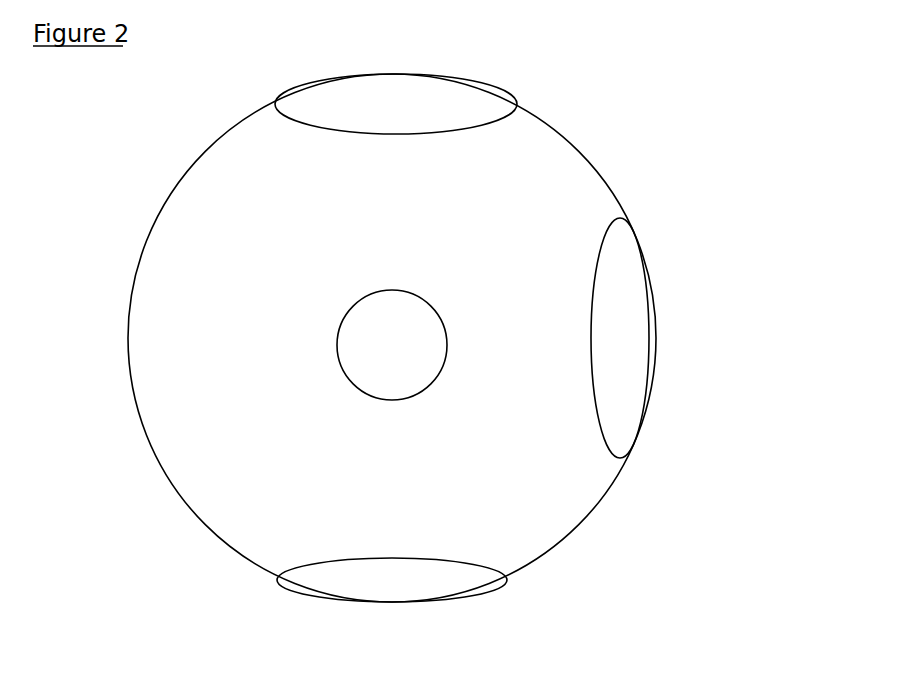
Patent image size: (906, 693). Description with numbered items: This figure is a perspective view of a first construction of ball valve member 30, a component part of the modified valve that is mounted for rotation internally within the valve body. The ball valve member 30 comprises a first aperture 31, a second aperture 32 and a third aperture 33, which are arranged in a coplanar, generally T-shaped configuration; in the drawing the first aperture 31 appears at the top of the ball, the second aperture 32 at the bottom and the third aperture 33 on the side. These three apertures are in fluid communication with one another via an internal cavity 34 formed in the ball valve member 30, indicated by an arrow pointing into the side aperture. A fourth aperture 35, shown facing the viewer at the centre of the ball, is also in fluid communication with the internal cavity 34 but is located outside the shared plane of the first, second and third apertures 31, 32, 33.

The ball valve member 30 is at (567, 180).
The first aperture 31 is at (478, 93).
The second aperture 32 is at (412, 587).
The third aperture 33 is at (633, 399).
The internal cavity 34 is at (612, 338).
The fourth aperture 35 is at (350, 338).